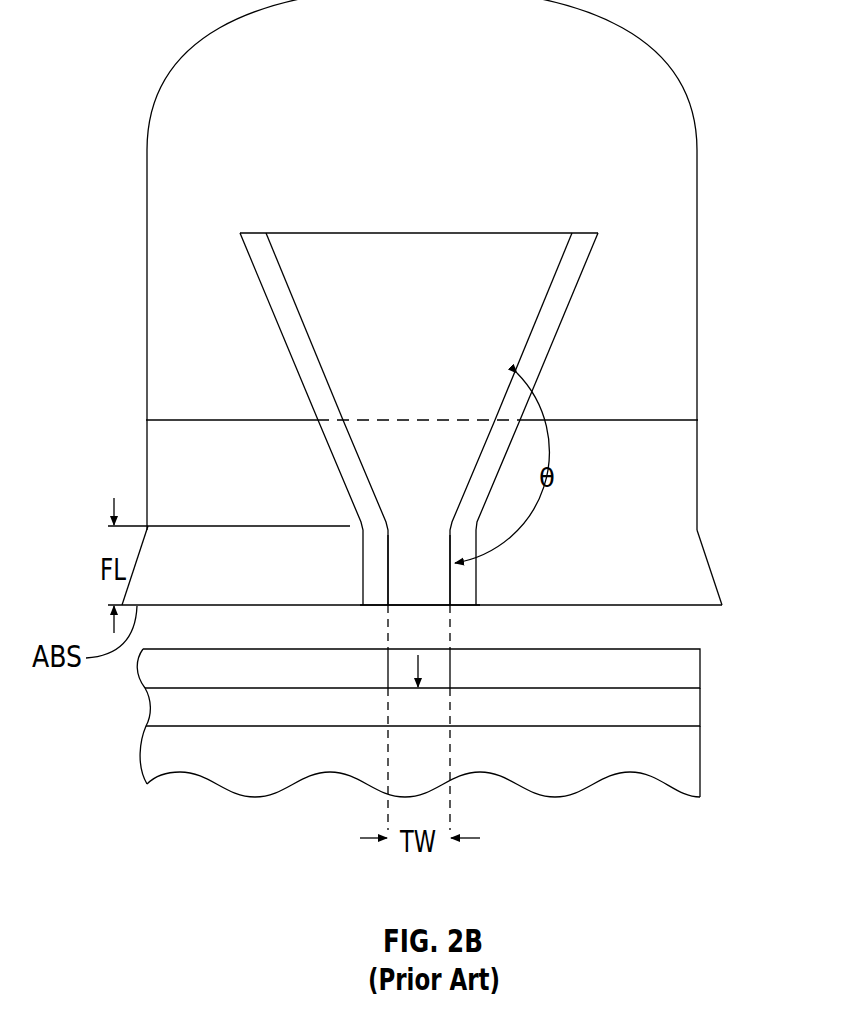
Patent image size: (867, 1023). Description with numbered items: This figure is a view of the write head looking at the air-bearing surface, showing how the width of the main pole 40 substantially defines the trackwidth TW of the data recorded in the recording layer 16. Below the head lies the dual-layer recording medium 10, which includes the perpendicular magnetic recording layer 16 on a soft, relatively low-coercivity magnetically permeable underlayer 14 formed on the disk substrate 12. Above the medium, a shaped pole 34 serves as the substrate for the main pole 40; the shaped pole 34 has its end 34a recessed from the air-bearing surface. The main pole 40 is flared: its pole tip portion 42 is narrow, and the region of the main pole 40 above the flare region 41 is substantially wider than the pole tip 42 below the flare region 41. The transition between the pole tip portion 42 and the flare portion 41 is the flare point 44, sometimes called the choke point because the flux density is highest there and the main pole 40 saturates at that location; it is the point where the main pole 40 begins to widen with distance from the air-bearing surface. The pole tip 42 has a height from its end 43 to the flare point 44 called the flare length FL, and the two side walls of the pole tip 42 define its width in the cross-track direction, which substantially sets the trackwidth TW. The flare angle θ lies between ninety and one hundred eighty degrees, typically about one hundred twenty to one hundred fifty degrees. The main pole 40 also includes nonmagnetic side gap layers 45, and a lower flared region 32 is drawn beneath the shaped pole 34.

The recording medium 10 is at (140, 845).
The disk substrate 12 is at (158, 754).
The soft underlayer 14 is at (158, 705).
The recording layer 16 is at (157, 660).
The write pole flare region 32 is at (685, 507).
The shaped pole 34 is at (697, 248).
The end of shaped pole 34a is at (588, 420).
The main pole 40 is at (321, 233).
The flare region 41 is at (357, 433).
The pole tip portion 42 is at (410, 586).
The end of main pole tip 43 is at (414, 606).
The flare point 44 is at (448, 526).
The nonmagnetic side gap layers 45 is at (272, 288).